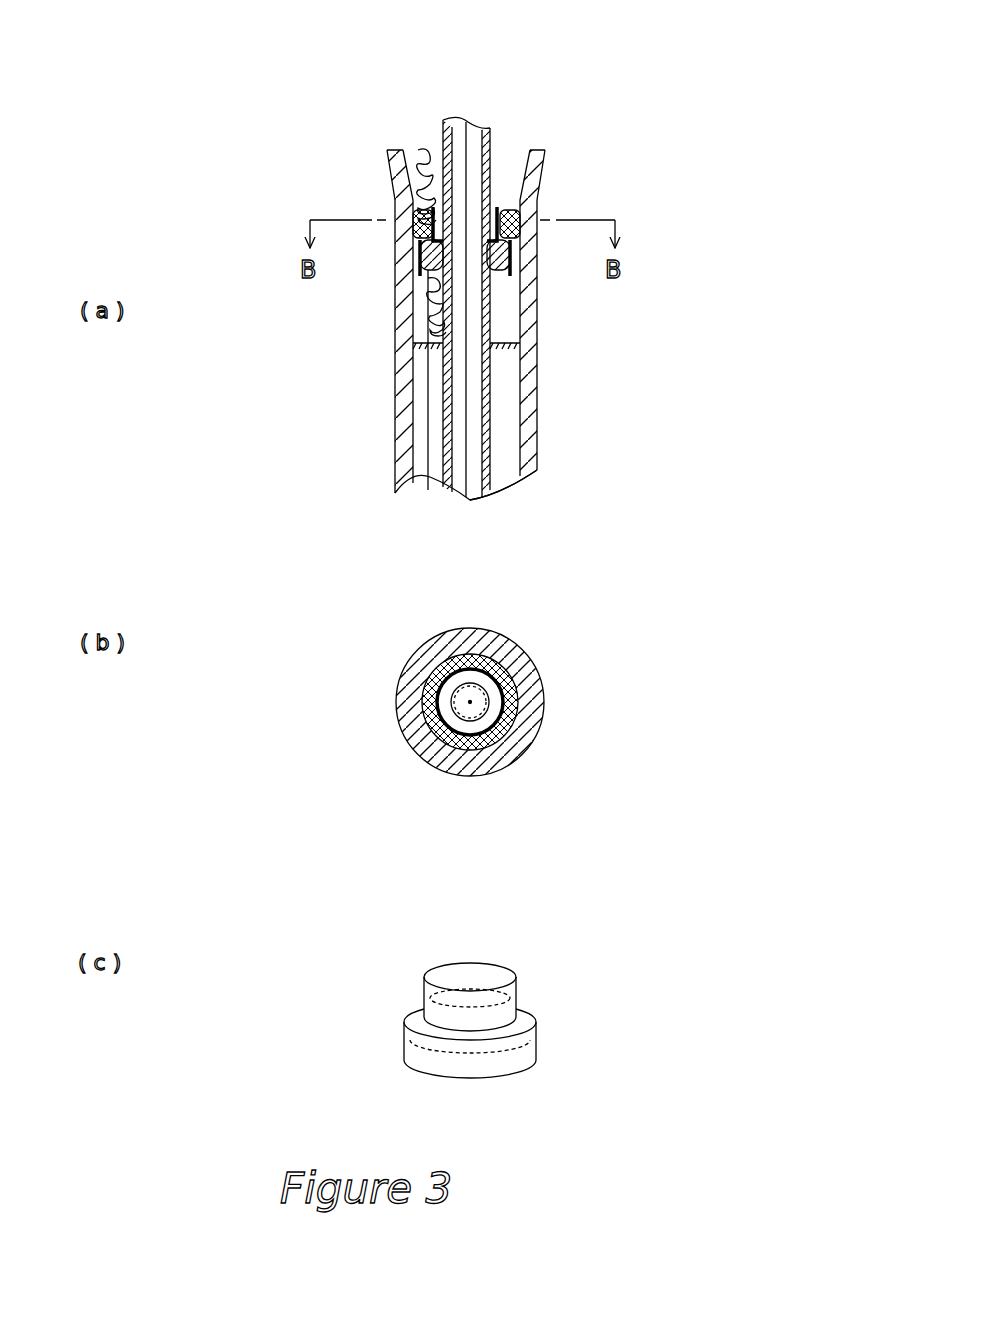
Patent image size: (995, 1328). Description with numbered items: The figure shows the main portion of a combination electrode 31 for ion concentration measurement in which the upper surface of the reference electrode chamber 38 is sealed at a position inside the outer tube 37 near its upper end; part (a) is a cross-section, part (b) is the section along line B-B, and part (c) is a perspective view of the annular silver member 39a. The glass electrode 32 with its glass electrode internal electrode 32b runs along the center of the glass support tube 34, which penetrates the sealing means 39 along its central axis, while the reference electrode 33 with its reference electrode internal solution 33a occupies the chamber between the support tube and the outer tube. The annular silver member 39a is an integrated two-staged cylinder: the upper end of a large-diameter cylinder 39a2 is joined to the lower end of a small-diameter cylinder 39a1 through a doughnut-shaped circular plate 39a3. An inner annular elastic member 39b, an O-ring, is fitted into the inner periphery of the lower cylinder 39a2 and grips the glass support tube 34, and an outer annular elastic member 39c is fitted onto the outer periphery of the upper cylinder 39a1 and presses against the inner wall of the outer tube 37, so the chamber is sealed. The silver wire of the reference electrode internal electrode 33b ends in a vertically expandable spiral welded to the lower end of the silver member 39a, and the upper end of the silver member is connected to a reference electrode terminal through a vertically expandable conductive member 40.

The combination electrode for ion concentration measurement 31 is at (533, 90).
The glass electrode 32 is at (492, 333).
The glass electrode internal electrode 32b is at (465, 480).
The reference electrode 33 is at (540, 386).
The reference electrode internal solution 33a is at (500, 487).
The reference electrode internal electrode 33b is at (430, 418).
The glass support tube 34 is at (483, 440).
The outer tube 37 is at (403, 447).
The reference electrode chamber 38 is at (508, 315).
The sealing means 39 is at (250, 80).
The annular silver member 39a is at (425, 210).
The cylinder having a small diameter 39a1 is at (518, 998).
The cylinder having a large diameter 39a2 is at (536, 1047).
The doughnut-shaped circular plate 39a3 is at (413, 1018).
The annular elastic member 39b is at (421, 255).
The annular elastic member 39c is at (408, 208).
The conductive member 40 is at (420, 148).